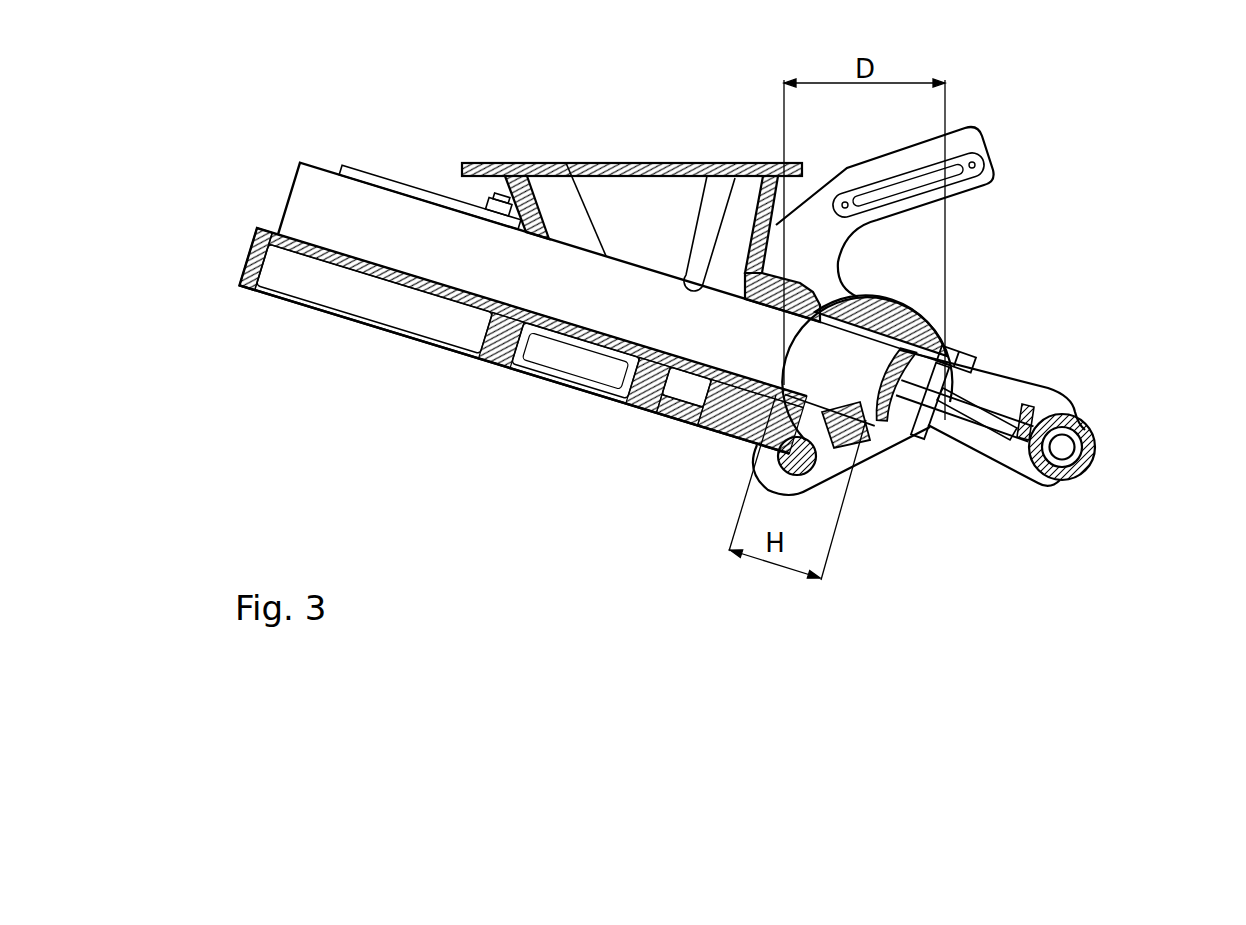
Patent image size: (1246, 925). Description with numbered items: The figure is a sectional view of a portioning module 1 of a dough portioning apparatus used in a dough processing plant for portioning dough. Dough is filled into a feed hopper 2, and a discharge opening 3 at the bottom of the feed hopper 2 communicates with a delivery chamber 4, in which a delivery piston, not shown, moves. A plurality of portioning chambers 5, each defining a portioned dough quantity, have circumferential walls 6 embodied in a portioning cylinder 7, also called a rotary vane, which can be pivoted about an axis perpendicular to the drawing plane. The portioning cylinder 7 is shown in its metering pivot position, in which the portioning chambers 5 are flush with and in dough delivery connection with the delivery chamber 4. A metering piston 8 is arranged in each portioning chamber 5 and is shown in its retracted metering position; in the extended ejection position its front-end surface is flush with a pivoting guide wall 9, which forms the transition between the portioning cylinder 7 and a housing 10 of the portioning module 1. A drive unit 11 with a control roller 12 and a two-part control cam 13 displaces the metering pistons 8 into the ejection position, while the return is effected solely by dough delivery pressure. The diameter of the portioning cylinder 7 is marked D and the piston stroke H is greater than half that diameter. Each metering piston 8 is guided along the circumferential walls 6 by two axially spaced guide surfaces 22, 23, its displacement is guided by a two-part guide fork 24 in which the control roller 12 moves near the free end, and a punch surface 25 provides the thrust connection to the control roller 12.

The portioning module 1 is at (603, 100).
The feed hopper 2 is at (488, 162).
The discharge opening 3 is at (690, 272).
The delivery chamber 4 is at (743, 345).
The portioning chamber 5 is at (826, 387).
The circumferential wall 6 is at (848, 430).
The portioning cylinder 7 is at (900, 300).
The metering piston 8 is at (982, 395).
The pivoting guide wall 9 is at (782, 347).
The housing 10 is at (695, 435).
The drive unit 11 is at (1100, 446).
The control roller 12 is at (1095, 452).
The control cam 13 is at (970, 130).
The guide surface 22 is at (896, 440).
The guide surface 23 is at (925, 440).
The guide fork 24 is at (1008, 378).
The punch surface 25 is at (1012, 455).